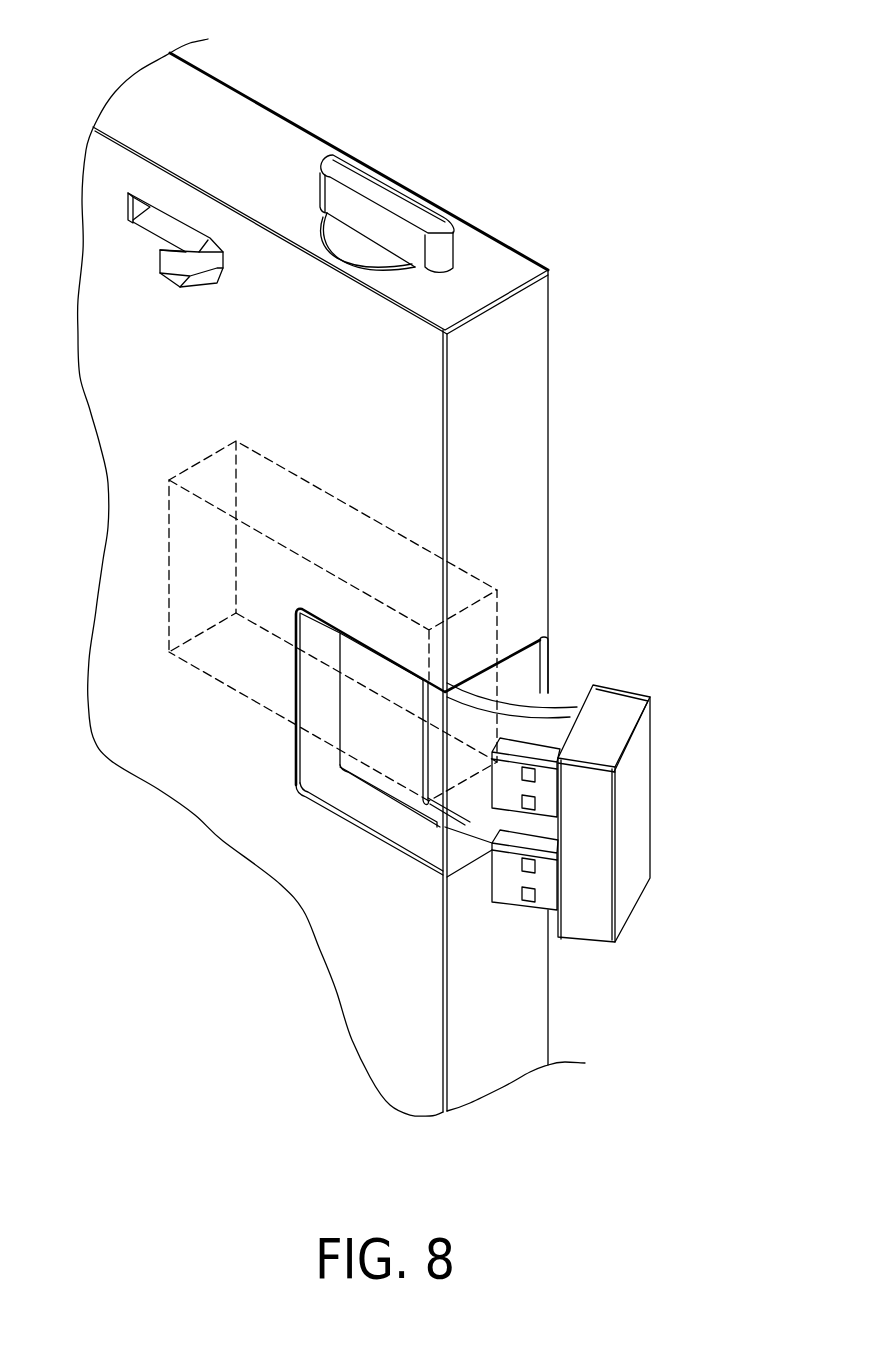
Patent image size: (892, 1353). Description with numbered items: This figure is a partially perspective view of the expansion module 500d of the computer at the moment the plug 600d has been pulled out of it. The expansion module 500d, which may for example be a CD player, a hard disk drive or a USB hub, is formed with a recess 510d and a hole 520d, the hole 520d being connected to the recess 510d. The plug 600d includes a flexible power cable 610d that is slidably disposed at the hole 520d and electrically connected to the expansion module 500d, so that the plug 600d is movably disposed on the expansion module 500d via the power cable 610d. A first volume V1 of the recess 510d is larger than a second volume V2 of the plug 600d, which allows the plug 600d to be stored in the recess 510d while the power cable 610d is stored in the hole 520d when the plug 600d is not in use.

The expansion module 500d is at (248, 74).
The recess 510d is at (517, 662).
The hole 520d is at (343, 530).
The plug 600d is at (630, 884).
The power cable 610d is at (550, 717).
The first volume V1 is at (340, 806).
The second volume V2 is at (642, 784).